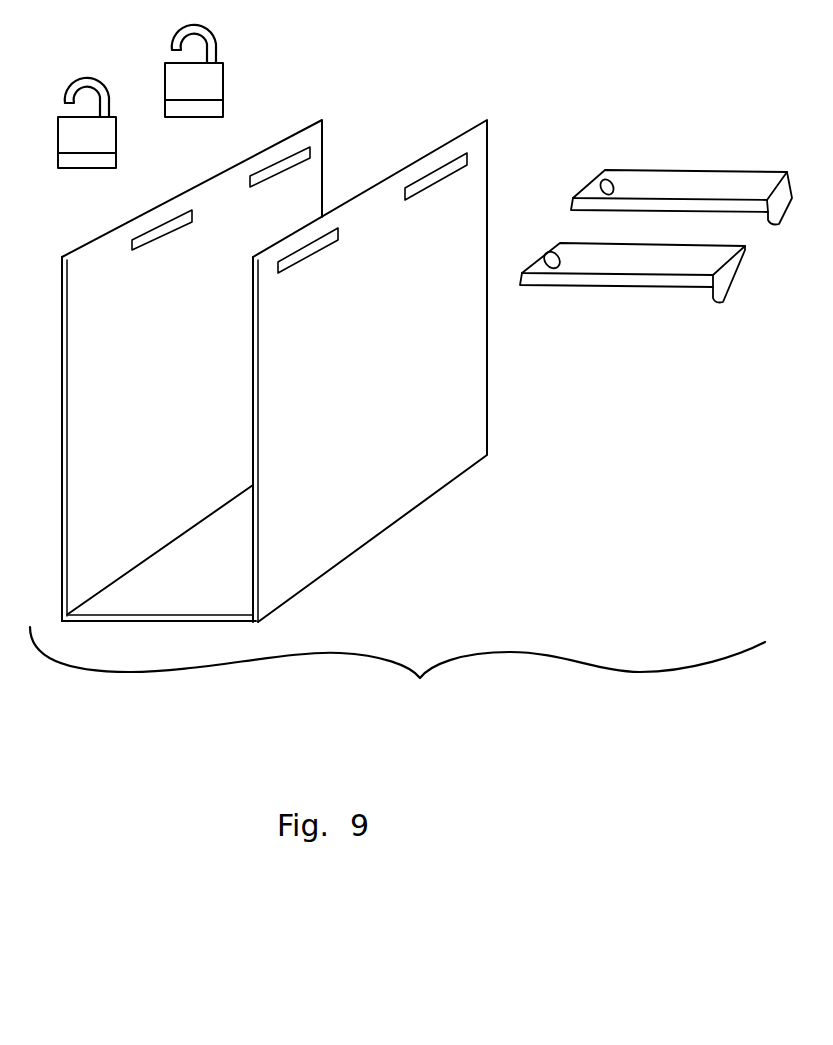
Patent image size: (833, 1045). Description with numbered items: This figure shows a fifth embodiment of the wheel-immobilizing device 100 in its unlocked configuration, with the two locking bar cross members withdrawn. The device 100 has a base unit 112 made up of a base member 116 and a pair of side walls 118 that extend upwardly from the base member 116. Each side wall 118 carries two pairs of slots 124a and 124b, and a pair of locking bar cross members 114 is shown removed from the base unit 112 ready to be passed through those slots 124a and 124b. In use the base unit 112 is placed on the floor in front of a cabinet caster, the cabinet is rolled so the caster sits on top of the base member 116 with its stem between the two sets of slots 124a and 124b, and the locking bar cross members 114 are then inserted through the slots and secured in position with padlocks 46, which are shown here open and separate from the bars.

The lock 46 is at (109, 144).
The embodiment of the invention 100 is at (397, 681).
The base unit 112 is at (436, 537).
The locking bar cross member 114 is at (648, 182).
The base member 116 is at (175, 602).
The side wall 118 is at (82, 472).
The slot 124a is at (275, 172).
The slot 124b is at (152, 238).